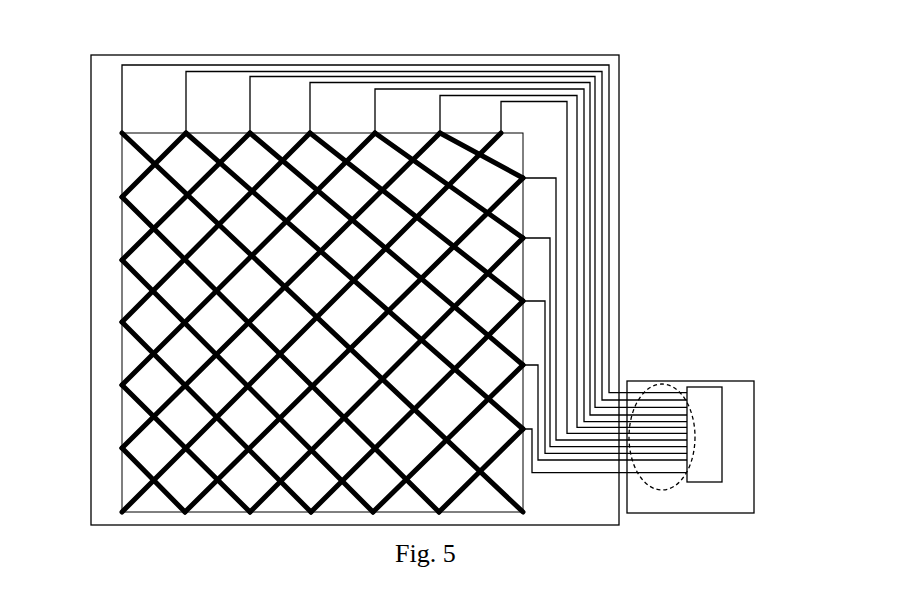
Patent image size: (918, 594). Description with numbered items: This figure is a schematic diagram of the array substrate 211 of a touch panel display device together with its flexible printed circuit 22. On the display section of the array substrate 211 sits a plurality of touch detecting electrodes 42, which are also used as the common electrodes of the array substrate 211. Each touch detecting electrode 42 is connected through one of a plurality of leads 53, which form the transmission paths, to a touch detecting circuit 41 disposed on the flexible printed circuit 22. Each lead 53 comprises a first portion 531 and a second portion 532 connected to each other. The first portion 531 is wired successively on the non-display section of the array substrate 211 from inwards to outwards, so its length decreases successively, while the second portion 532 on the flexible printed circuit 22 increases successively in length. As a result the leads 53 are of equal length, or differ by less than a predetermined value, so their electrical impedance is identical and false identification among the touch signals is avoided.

The array substrate 211 is at (355, 54).
The touch detecting electrodes 42 is at (140, 150).
The leads 53 is at (461, 277).
The first portion 531 is at (612, 330).
The second portion 532 is at (652, 392).
The touch detecting circuit 41 is at (723, 435).
The flexible printed circuit 22 is at (755, 473).